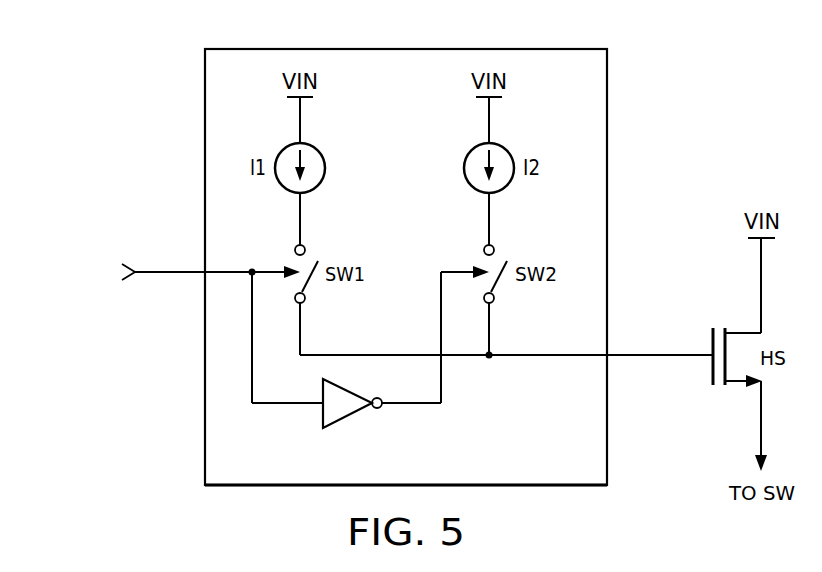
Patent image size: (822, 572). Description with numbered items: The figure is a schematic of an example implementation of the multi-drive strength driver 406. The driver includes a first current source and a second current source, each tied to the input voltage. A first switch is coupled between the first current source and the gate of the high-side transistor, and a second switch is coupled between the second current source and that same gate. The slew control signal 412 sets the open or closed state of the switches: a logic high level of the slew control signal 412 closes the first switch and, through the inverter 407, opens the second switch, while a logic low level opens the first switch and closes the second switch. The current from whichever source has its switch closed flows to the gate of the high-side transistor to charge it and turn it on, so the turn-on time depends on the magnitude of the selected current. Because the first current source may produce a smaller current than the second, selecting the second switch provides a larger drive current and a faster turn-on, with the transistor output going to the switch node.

The multi-drive strength driver 406 is at (199, 177).
The slew control signal 412 is at (170, 273).
The inverter 407 is at (347, 417).